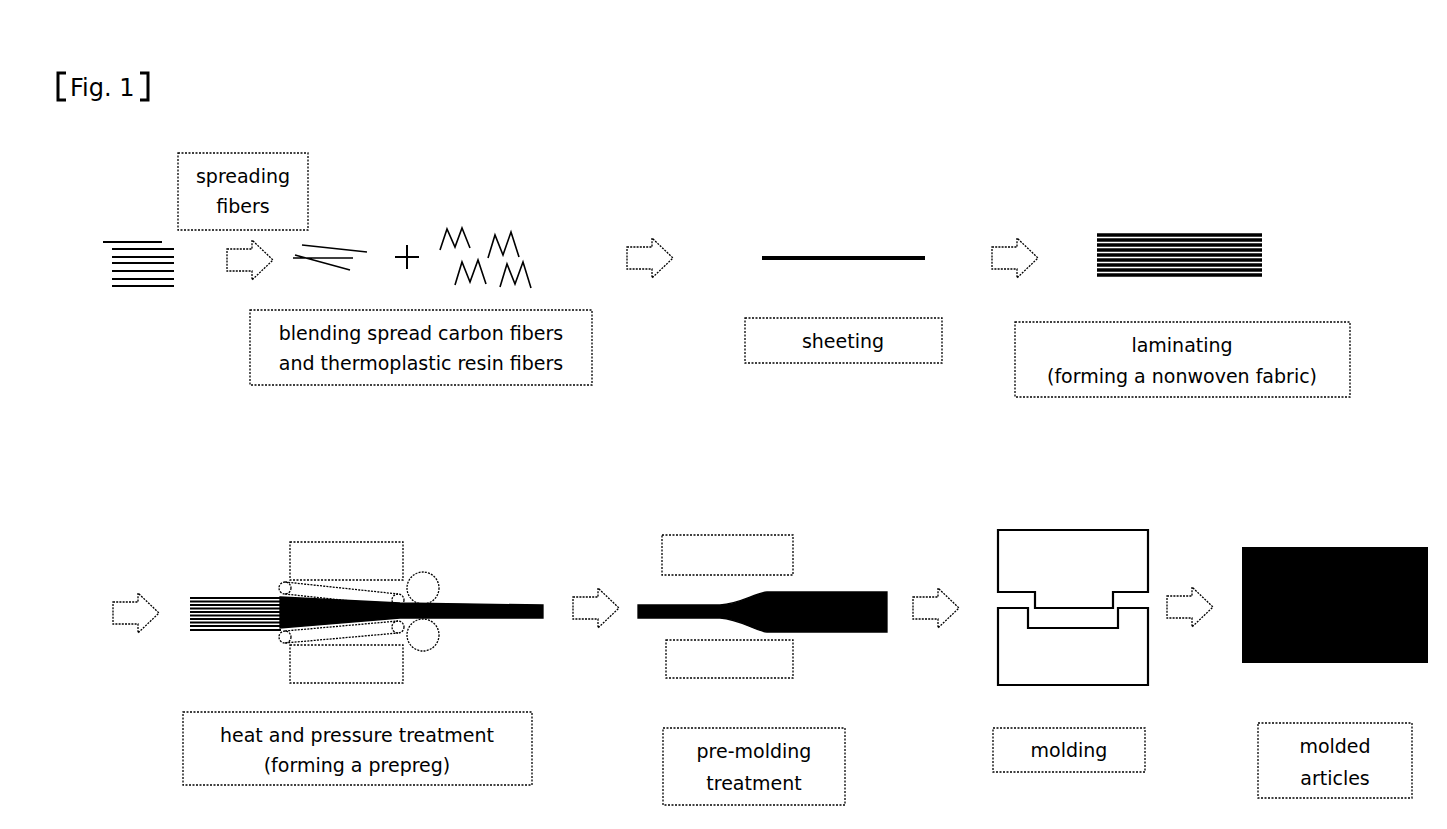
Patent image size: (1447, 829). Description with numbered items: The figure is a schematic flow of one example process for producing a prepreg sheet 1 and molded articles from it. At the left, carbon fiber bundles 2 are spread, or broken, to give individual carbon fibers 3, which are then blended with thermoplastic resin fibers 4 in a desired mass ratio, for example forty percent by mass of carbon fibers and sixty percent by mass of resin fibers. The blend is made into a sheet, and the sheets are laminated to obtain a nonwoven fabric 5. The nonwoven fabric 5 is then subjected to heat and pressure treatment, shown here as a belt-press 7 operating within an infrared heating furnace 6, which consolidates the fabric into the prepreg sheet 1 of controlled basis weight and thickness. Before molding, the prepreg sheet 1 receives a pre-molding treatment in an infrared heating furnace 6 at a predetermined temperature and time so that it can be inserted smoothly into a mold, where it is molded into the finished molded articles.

The prepreg sheet 1 is at (495, 605).
The carbon fiber bundles 2 is at (118, 243).
The carbon fibers 3 is at (322, 248).
The thermoplastic resin fibers 4 is at (513, 235).
The nonwoven fabric 5 is at (1232, 233).
The infrared heating furnace 6 is at (385, 548).
The belt-press 7 is at (428, 575).